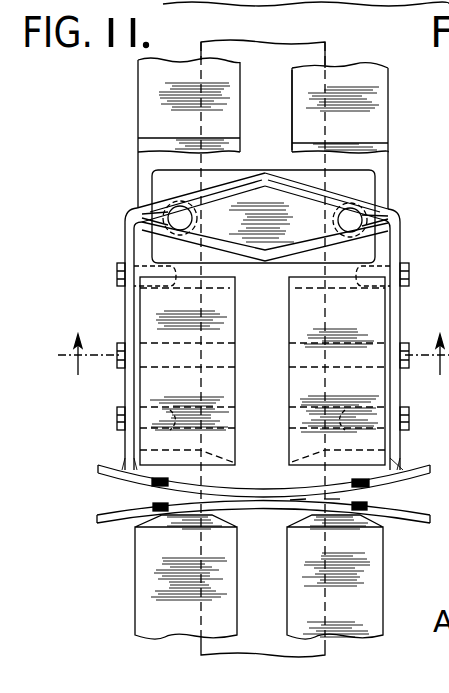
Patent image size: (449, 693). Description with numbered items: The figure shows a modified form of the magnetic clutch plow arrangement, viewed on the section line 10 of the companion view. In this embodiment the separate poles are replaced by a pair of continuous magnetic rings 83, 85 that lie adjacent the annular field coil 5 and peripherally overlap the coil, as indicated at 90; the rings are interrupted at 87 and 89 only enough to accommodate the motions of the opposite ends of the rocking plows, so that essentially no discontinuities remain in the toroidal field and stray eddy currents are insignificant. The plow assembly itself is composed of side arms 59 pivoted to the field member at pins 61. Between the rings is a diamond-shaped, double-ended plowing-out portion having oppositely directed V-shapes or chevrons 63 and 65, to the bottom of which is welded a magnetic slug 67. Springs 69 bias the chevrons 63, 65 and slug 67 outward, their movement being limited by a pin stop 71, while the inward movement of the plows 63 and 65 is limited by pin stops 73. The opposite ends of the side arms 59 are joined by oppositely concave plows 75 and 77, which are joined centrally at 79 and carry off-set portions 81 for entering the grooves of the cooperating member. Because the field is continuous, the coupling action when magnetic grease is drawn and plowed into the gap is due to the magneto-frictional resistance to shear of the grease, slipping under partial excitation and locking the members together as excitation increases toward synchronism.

The annular field coil 5 is at (253, 52).
The continuous magnetic ring 83 is at (177, 67).
The continuous magnetic ring 85 is at (357, 68).
The interruption 87 is at (167, 152).
The peripheral overlap 90 is at (292, 105).
The side arms 59 is at (124, 248).
The magnetic slug 67 is at (213, 177).
The chevron 63 is at (314, 182).
The chevron 65 is at (314, 246).
The springs 69 is at (197, 215).
The pin stops 73 is at (118, 268).
The pins 61 is at (119, 343).
The pin stop 71 is at (117, 420).
The section line 10 is at (253, 367).
The off-set portions 81 is at (120, 515).
The concave plow 77 is at (345, 483).
The central joint 79 is at (298, 506).
The concave plow 75 is at (330, 506).
The interruption 89 is at (160, 522).